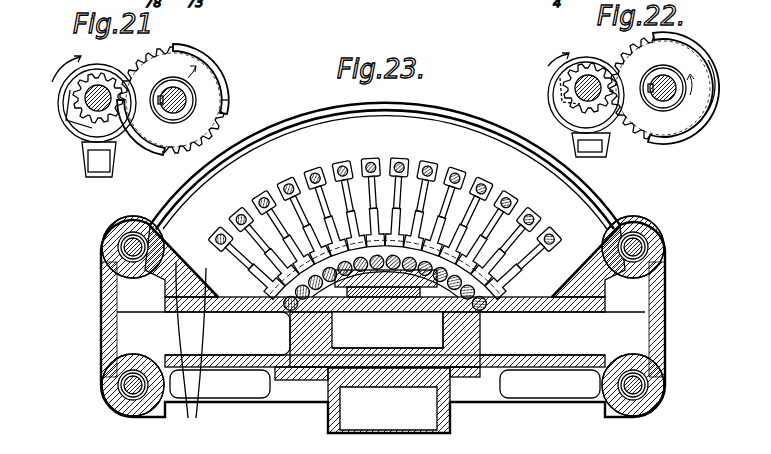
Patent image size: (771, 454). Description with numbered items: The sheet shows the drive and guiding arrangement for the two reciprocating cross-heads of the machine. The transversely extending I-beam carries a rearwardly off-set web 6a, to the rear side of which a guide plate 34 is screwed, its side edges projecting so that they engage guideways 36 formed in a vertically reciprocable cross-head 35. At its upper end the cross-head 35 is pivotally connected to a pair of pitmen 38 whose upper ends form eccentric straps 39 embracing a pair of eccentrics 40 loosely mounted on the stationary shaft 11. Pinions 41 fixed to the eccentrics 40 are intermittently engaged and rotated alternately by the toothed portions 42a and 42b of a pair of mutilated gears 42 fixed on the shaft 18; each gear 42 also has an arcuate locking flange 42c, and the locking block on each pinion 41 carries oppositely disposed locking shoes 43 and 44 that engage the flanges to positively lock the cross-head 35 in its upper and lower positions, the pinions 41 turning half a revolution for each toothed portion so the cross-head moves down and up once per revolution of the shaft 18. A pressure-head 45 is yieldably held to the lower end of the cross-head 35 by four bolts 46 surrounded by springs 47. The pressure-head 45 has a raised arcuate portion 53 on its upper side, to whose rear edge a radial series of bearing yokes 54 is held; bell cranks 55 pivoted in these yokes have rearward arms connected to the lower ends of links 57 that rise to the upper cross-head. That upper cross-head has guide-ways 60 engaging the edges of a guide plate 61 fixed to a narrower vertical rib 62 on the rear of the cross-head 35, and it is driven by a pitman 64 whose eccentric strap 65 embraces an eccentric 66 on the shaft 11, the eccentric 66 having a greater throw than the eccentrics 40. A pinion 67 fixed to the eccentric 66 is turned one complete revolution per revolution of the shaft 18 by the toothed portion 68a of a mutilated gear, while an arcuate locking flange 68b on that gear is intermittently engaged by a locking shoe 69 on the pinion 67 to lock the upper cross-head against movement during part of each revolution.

In FIG. 23, the web 6a is at (425, 388).
In FIG. 21, the stationary shaft 11 is at (103, 88).
In FIG. 22, the stationary shaft 11 is at (590, 78).
In FIG. 21, the shaft 18 is at (185, 98).
In FIG. 22, the shaft 18 is at (678, 98).
In FIG. 23, the guide plate 34 is at (385, 315).
In FIG. 23, the cross-head 35 is at (300, 329).
In FIG. 23, the guideways 36 is at (485, 350).
In FIG. 21, the pitmen 38 is at (88, 162).
In FIG. 21, the eccentric straps 39 is at (78, 122).
In FIG. 21, the eccentrics 40 is at (88, 140).
In FIG. 21, the pinions 41 is at (52, 82).
In FIG. 21, the mutilated gears 42 is at (196, 66).
In FIG. 21, the toothed portion 42a is at (160, 148).
In FIG. 21, the toothed portion 42b is at (180, 45).
In FIG. 21, the arcuate locking flange 42c is at (228, 98).
In FIG. 21, the locking shoe 43 is at (72, 100).
In FIG. 21, the locking shoe 44 is at (164, 88).
In FIG. 23, the pressure-head 45 is at (191, 348).
In FIG. 23, the bolts 46 is at (118, 247).
In FIG. 23, the springs 47 is at (133, 278).
In FIG. 23, the raised arcuate portion 53 is at (540, 272).
In FIG. 23, the bearing yokes 54 is at (394, 240).
In FIG. 23, the bell cranks 55 is at (483, 225).
In FIG. 23, the links 57 is at (300, 210).
In FIG. 23, the guide-ways 60 is at (372, 240).
In FIG. 23, the guide plate 61 is at (345, 292).
In FIG. 23, the rib 62 is at (410, 292).
In FIG. 22, the pitman 64 is at (600, 150).
In FIG. 22, the eccentric strap 65 is at (553, 95).
In FIG. 22, the eccentric 66 is at (605, 125).
In FIG. 22, the pinion 67 is at (575, 112).
In FIG. 22, the toothed portion 68a is at (660, 40).
In FIG. 22, the arcuate locking flange 68b is at (715, 78).
In FIG. 22, the locking shoe 69 is at (560, 82).